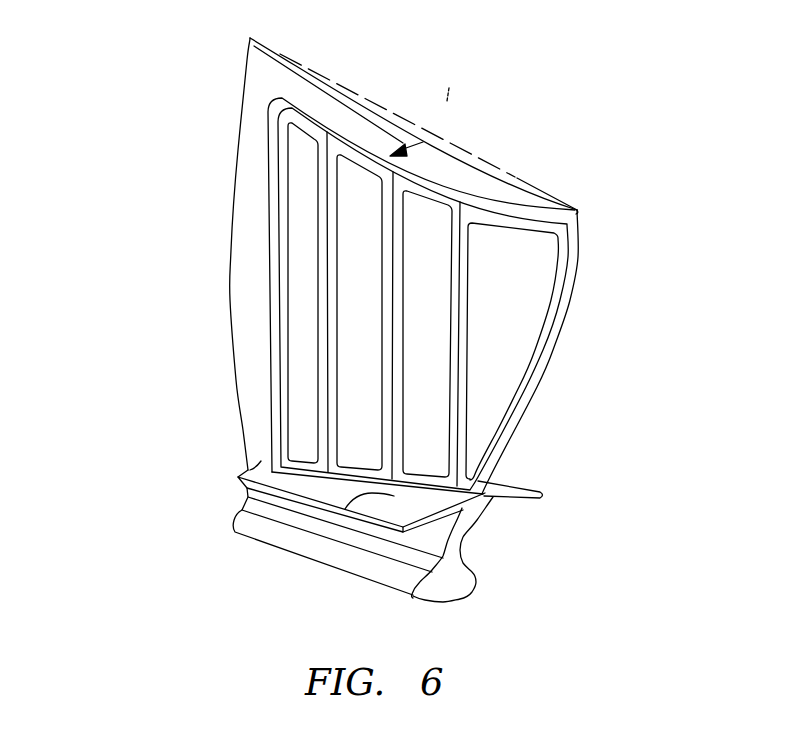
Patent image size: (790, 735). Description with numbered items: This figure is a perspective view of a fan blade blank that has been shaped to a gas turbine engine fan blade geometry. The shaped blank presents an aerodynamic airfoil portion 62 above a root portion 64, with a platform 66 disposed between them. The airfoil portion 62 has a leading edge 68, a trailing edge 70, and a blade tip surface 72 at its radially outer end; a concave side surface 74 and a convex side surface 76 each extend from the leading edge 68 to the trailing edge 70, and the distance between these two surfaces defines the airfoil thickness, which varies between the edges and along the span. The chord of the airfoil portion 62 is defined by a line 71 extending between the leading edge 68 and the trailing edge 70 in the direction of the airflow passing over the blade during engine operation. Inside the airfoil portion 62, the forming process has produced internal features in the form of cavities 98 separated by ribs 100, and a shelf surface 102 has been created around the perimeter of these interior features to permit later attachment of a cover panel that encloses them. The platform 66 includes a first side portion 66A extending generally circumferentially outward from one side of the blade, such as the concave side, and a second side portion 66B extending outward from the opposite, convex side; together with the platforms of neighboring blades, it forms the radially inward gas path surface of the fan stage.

The airfoil portion 62 is at (368, 264).
The root portion 64 is at (481, 577).
The platform 66 is at (427, 510).
The first side portion 66A is at (507, 493).
The second side portion 66B is at (346, 506).
The leading edge 68 is at (238, 157).
The trailing edge 70 is at (563, 333).
The line 71 is at (479, 156).
The blade tip surface 72 is at (510, 200).
The concave side surface 74 is at (374, 110).
The convex side surface 76 is at (247, 253).
The cavities 98 is at (345, 375).
The ribs 100 is at (400, 275).
The shelf surface 102 is at (263, 118).